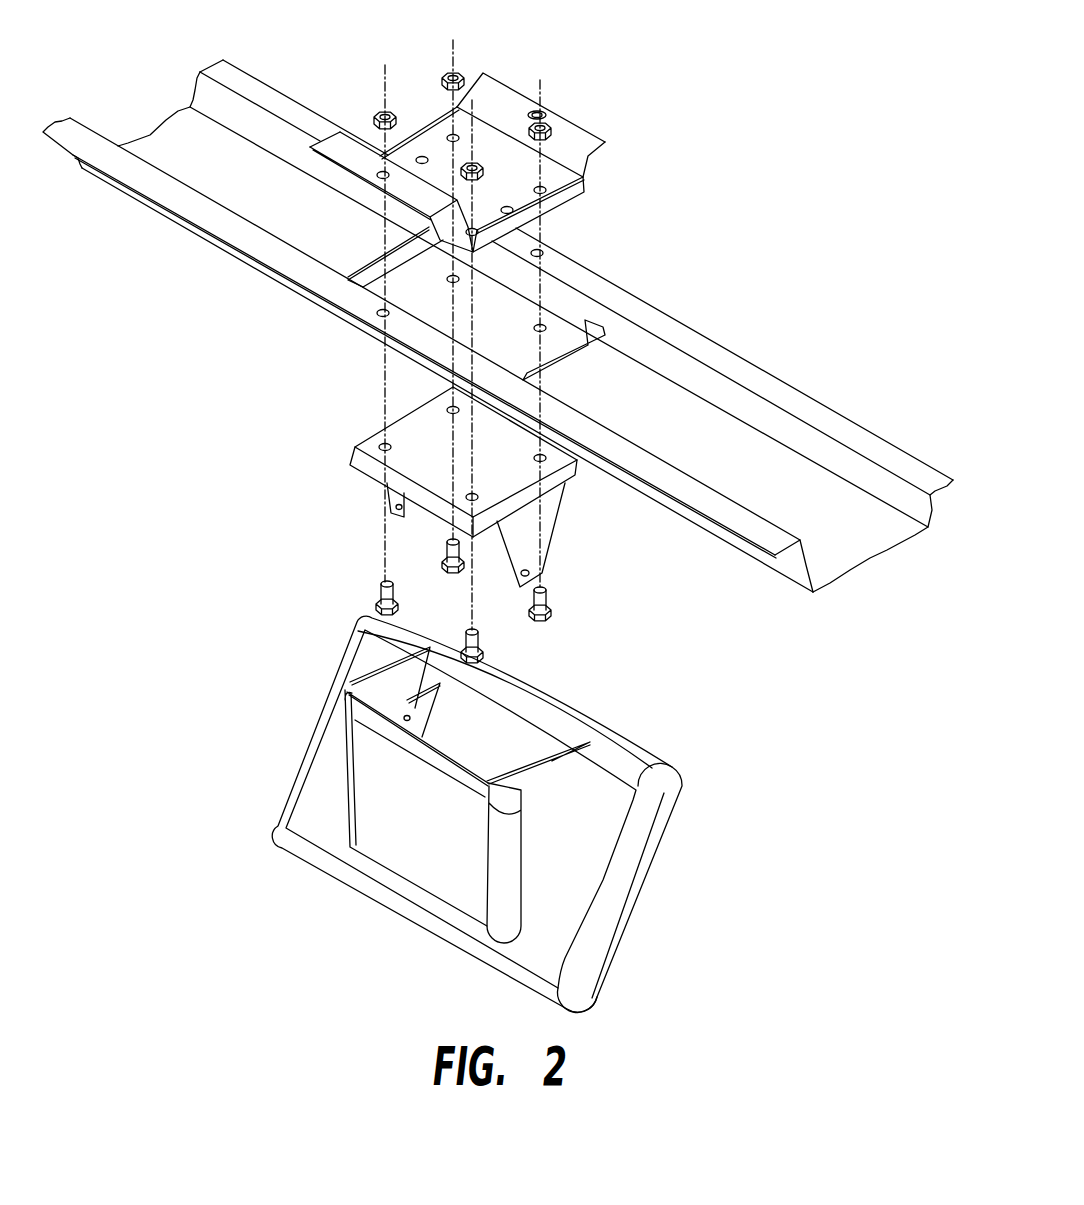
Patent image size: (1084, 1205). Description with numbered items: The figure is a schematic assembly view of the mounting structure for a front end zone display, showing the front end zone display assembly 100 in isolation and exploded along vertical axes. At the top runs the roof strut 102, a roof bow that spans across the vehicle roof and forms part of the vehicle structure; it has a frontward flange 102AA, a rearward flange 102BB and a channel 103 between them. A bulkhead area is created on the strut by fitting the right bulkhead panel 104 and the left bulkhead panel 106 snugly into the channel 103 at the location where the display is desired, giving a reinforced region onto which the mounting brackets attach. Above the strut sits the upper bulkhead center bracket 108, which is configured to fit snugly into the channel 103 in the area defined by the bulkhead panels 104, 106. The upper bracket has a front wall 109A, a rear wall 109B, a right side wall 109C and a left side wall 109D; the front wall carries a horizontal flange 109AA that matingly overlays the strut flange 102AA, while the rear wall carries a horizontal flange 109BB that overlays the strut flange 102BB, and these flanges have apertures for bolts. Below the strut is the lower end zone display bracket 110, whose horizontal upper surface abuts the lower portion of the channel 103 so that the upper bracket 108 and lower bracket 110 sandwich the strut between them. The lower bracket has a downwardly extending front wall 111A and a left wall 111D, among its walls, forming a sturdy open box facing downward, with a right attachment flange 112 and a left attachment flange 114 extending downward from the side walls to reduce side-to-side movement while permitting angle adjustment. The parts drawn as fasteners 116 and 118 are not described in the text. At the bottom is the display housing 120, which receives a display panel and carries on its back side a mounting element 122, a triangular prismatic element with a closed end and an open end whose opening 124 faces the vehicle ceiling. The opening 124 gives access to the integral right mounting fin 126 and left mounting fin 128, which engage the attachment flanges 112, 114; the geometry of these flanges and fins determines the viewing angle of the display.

The front end zone display assembly 100 is at (146, 317).
The roof strut 102 is at (498, 310).
The frontward flange of strut 102AA is at (262, 250).
The rearward flange of strut 102BB is at (648, 317).
The channel 103 is at (163, 141).
The right bulkhead panel 104 is at (368, 263).
The left bulkhead panel 106 is at (562, 357).
The upper bulkhead center bracket 108 is at (452, 139).
The front wall 109A is at (360, 182).
The horizontal flange 109AA is at (338, 147).
The rear wall 109B is at (568, 157).
The horizontal flange 109BB is at (487, 80).
The right side wall 109C is at (420, 133).
The left side wall 109D is at (553, 197).
The lower end zone display bracket 110 is at (458, 487).
The front wall 111A is at (370, 467).
The left wall 111D is at (537, 487).
The attachment flange 112 is at (388, 508).
The attachment flange 114 is at (538, 530).
The bolt 116 is at (550, 602).
The nut 118 is at (447, 70).
The display housing 120 is at (485, 814).
The mounting element 122 is at (393, 773).
The opening 124 is at (475, 730).
The right mounting fin 126 is at (418, 710).
The left mounting fin 128 is at (535, 763).